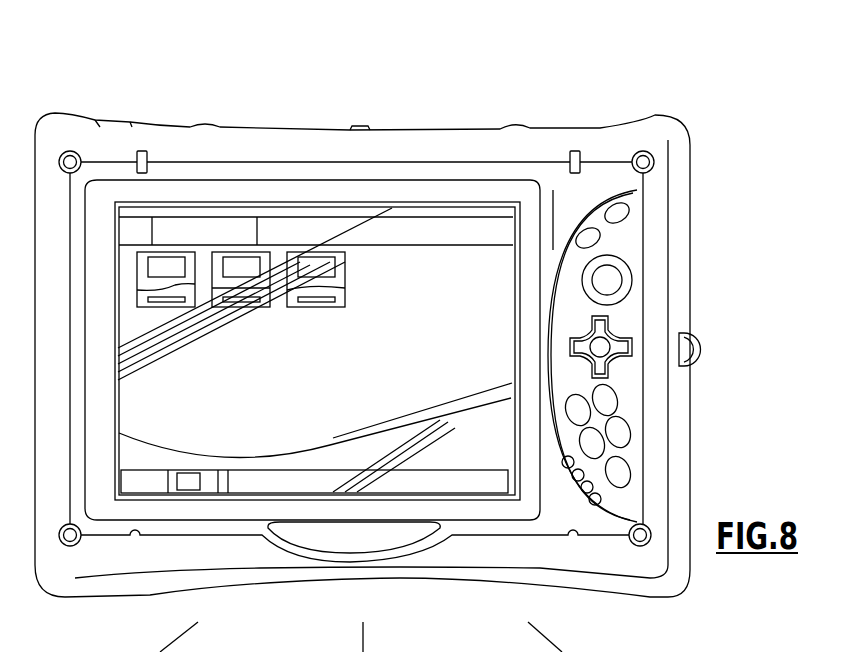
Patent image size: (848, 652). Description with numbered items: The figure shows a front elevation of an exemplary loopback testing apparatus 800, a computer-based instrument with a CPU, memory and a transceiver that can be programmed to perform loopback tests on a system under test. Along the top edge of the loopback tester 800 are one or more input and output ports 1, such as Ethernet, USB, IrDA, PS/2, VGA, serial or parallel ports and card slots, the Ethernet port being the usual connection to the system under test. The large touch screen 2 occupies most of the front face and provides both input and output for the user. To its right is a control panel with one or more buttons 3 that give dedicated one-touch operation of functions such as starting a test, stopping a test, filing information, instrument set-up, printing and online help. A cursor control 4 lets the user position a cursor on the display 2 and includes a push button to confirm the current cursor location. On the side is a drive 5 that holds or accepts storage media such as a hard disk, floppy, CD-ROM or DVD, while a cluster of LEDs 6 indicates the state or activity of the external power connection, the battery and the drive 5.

The loopback testing apparatus 800 is at (283, 62).
The input and output ports 1 is at (358, 110).
The touch screen 2 is at (452, 230).
The buttons 3 is at (622, 228).
The cursor control 4 is at (631, 282).
The drive 5 is at (703, 354).
The LEDs 6 is at (595, 488).